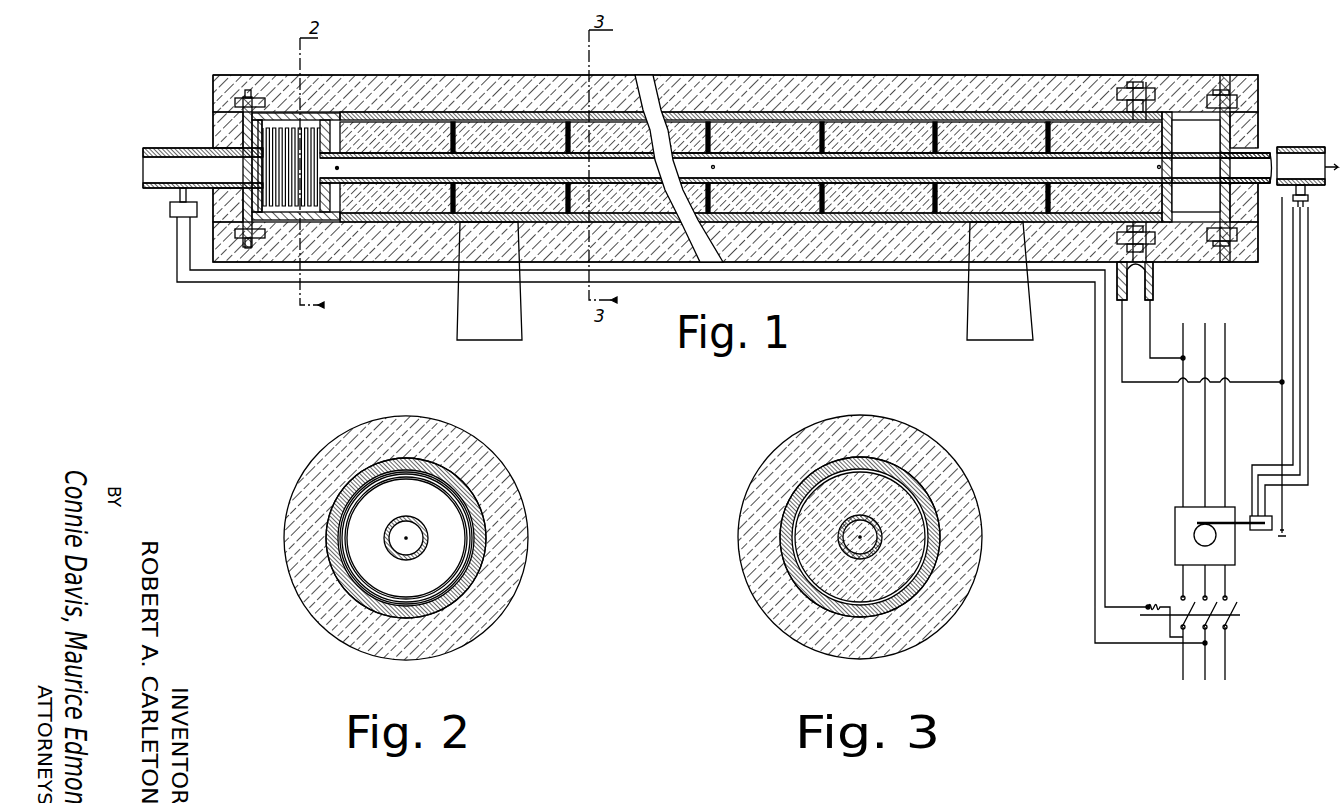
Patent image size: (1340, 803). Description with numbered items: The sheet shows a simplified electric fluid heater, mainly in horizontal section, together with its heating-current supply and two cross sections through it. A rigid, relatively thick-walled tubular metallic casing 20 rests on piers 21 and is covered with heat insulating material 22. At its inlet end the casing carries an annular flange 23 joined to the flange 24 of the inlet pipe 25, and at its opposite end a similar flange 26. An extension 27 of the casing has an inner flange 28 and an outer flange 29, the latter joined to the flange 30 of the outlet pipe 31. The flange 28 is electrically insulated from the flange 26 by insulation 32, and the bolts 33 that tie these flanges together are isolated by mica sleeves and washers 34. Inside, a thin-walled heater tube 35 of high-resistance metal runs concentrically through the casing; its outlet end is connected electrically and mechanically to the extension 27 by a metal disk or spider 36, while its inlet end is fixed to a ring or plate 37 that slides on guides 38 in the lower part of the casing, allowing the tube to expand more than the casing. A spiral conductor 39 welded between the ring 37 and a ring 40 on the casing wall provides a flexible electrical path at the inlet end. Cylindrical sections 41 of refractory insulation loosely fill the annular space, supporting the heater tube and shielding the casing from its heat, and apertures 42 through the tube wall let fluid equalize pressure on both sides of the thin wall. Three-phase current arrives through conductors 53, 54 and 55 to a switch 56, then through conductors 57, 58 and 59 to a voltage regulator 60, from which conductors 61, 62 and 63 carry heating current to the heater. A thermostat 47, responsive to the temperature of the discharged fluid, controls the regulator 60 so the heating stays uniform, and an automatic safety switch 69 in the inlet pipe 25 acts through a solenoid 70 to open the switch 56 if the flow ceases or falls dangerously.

In FIG. 1, the tubular metallic casing 20 is at (836, 115).
In FIG. 2, the tubular metallic casing 20 is at (470, 478).
In FIG. 3, the tubular metallic casing 20 is at (912, 478).
In FIG. 1, the piers 21 is at (458, 302).
In FIG. 1, the heat insulating material 22 is at (1000, 92).
In FIG. 2, the heat insulating material 22 is at (480, 600).
In FIG. 3, the heat insulating material 22 is at (960, 590).
In FIG. 1, the annular flange 23 is at (251, 245).
In FIG. 1, the flange 24 is at (246, 248).
In FIG. 1, the inlet pipe 25 is at (162, 148).
In FIG. 2, the inlet pipe 25 is at (428, 543).
In FIG. 1, the flange 26 is at (1117, 290).
In FIG. 1, the extension 27 is at (1168, 222).
In FIG. 1, the flange 28 is at (1160, 290).
In FIG. 1, the flange 29 is at (1222, 242).
In FIG. 1, the flange 30 is at (1232, 118).
In FIG. 1, the outlet pipe 31 is at (1300, 147).
In FIG. 1, the insulation 32 is at (1137, 82).
In FIG. 1, the bolts 33 is at (1118, 88).
In FIG. 1, the sleeves and washers 34 is at (1155, 90).
In FIG. 1, the heater tube 35 is at (903, 150).
In FIG. 3, the heater tube 35 is at (882, 538).
In FIG. 1, the metal disk or spider 36 is at (1200, 120).
In FIG. 1, the ring or plate 37 is at (310, 130).
In FIG. 2, the ring or plate 37 is at (452, 535).
In FIG. 1, the guides 38 is at (310, 215).
In FIG. 2, the guides 38 is at (428, 595).
In FIG. 1, the spiral conductor 39 is at (300, 135).
In FIG. 2, the spiral conductor 39 is at (470, 505).
In FIG. 1, the ring 40 is at (260, 128).
In FIG. 1, the cylindrical sections 41 is at (770, 135).
In FIG. 3, the cylindrical sections 41 is at (900, 522).
In FIG. 1, the apertures 42 is at (560, 168).
In FIG. 1, the thermostat 47 is at (1308, 199).
In FIG. 1, the conductor 53 is at (1183, 670).
In FIG. 1, the conductor 54 is at (1205, 672).
In FIG. 1, the conductor 55 is at (1225, 667).
In FIG. 1, the switch 56 is at (1232, 617).
In FIG. 1, the conductor 57 is at (1183, 580).
In FIG. 1, the conductor 58 is at (1225, 585).
In FIG. 1, the conductor 59 is at (1205, 580).
In FIG. 1, the voltage regulator 60 is at (1238, 548).
In FIG. 1, the conductor 61 is at (1225, 425).
In FIG. 1, the conductor 62 is at (1183, 412).
In FIG. 1, the conductor 63 is at (1205, 437).
In FIG. 1, the automatic safety switch 69 is at (180, 210).
In FIG. 1, the solenoid 70 is at (1158, 618).